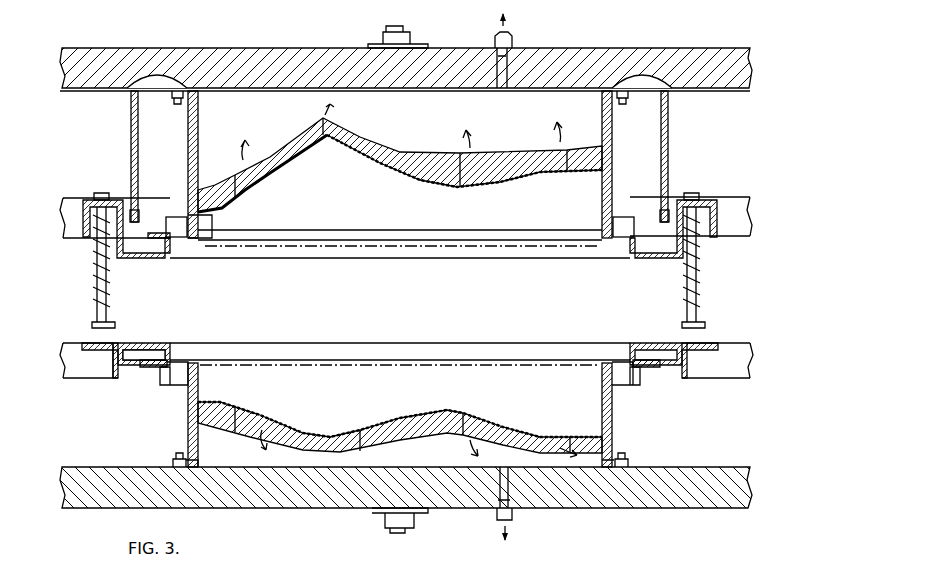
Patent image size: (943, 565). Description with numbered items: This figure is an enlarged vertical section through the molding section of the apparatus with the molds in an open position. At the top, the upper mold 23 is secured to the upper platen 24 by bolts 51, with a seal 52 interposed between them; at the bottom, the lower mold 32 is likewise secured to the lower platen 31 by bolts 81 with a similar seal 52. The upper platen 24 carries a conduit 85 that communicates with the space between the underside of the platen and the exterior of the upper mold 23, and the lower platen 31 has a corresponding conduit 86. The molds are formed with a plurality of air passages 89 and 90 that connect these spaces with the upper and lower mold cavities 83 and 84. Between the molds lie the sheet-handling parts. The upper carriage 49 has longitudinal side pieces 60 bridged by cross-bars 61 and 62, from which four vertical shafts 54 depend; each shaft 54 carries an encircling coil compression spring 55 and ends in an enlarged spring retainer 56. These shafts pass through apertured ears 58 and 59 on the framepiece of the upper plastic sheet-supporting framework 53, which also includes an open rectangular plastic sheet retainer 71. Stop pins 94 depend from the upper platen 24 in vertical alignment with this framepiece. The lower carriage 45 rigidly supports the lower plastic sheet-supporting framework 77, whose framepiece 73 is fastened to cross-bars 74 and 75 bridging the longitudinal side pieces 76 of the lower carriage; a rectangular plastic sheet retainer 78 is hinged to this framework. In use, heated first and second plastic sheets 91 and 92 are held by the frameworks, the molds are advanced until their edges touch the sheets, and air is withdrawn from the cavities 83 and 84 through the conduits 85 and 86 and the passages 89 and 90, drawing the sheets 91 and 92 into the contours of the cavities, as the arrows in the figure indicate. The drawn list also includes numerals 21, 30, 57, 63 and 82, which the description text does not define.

The fluid port fitting 21 is at (382, 37).
The upper mold 23 is at (612, 132).
The upper platen 24 is at (722, 48).
The lower fluid port fitting 30 is at (386, 527).
The lower platen 31 is at (700, 508).
The lower mold 32 is at (612, 405).
The lower carriage 45 is at (716, 322).
The upper carriage 49 is at (742, 178).
The bolts 51 is at (178, 106).
The seal 52 is at (138, 86).
The upper plastic sheet-supporting framework 53 is at (640, 258).
The vertical shafts 54 is at (110, 278).
The coil compression spring 55 is at (112, 303).
The spring retainer 56 is at (98, 328).
The arm 57 is at (85, 220).
The ears 58 is at (139, 200).
The ears 59 is at (664, 205).
The longitudinal side pieces 60 is at (740, 198).
The cross-bar 61 is at (726, 195).
The cross-bar 62 is at (62, 196).
The upper diaphragm sheet 63 is at (262, 258).
The plastic sheet retainer 71 is at (166, 222).
The framepiece 73 is at (388, 343).
The cross-bar 74 is at (112, 358).
The cross-bar 75 is at (690, 361).
The longitudinal side pieces 76 is at (735, 348).
The lower plastic sheet-supporting framework 77 is at (248, 330).
The plastic sheet retainer 78 is at (165, 373).
The bolts 81 is at (179, 455).
The foot 82 is at (199, 461).
The upper mold cavity 83 is at (276, 178).
The lower mold cavity 84 is at (386, 418).
The conduit 85 is at (514, 41).
The conduit 86 is at (513, 515).
The air passages 89 is at (355, 135).
The air passages 90 is at (258, 433).
The first plastic sheet 91 is at (420, 188).
The second plastic sheet 92 is at (508, 425).
The stop pins 94 is at (131, 176).